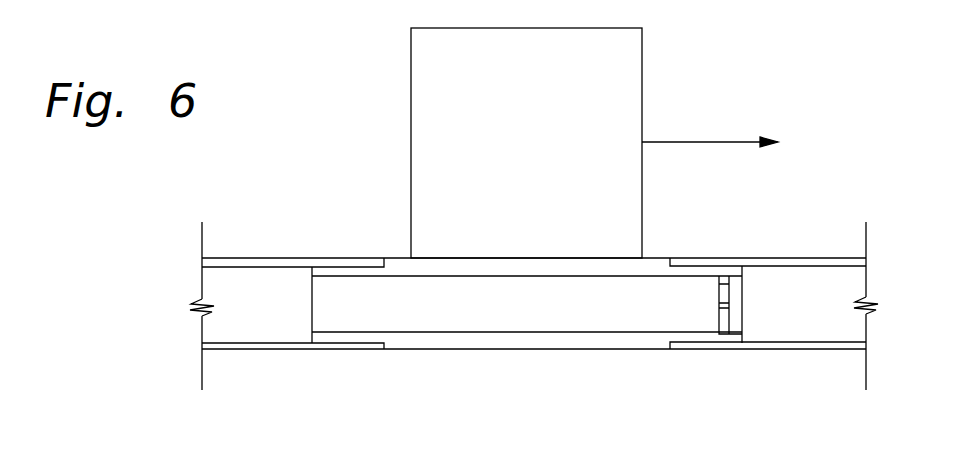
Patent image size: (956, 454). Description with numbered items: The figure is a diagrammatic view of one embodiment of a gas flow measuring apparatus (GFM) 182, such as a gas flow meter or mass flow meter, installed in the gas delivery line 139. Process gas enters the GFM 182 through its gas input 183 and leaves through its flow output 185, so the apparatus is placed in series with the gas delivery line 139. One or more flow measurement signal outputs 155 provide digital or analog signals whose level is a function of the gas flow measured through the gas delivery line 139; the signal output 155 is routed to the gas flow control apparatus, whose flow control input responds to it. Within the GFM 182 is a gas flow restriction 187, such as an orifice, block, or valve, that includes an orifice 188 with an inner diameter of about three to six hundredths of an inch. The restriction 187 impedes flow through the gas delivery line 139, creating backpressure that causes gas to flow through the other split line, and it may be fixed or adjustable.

The gas flow measuring apparatus (GFM) 182 is at (410, 86).
The flow measurement signal output 155 is at (643, 141).
The gas input 183 is at (342, 266).
The gas delivery line 139 is at (777, 258).
The flow output 185 is at (655, 342).
The gas flow restriction 187 is at (723, 285).
The orifice 188 is at (725, 303).